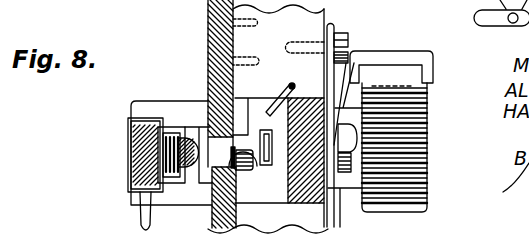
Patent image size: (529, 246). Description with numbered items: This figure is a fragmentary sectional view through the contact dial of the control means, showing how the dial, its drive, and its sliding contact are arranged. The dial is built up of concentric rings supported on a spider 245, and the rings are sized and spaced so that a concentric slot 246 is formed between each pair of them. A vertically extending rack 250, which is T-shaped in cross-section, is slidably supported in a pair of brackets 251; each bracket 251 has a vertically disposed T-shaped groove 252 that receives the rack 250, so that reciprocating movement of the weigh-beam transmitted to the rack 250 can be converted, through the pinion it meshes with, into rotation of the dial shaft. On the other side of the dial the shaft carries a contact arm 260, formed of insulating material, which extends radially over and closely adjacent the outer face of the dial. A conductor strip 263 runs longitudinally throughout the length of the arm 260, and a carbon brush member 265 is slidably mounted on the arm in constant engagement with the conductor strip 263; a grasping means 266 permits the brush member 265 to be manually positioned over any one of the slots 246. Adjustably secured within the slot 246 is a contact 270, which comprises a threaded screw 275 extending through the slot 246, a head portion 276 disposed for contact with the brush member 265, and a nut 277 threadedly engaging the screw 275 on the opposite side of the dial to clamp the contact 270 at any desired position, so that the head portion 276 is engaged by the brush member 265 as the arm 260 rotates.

The spider 245 is at (305, 99).
The concentric slot 246 is at (237, 205).
The rack 250 is at (407, 70).
The bracket 251 is at (358, 52).
The T-shaped groove 252 is at (380, 67).
The contact arm 260 is at (131, 160).
The conductor strip 263 is at (167, 118).
The carbon brush member 265 is at (129, 112).
The grasping means 266 is at (141, 222).
The contact 270 is at (200, 135).
The threaded screw 275 is at (247, 165).
The head portion 276 is at (198, 122).
The nut 277 is at (244, 174).